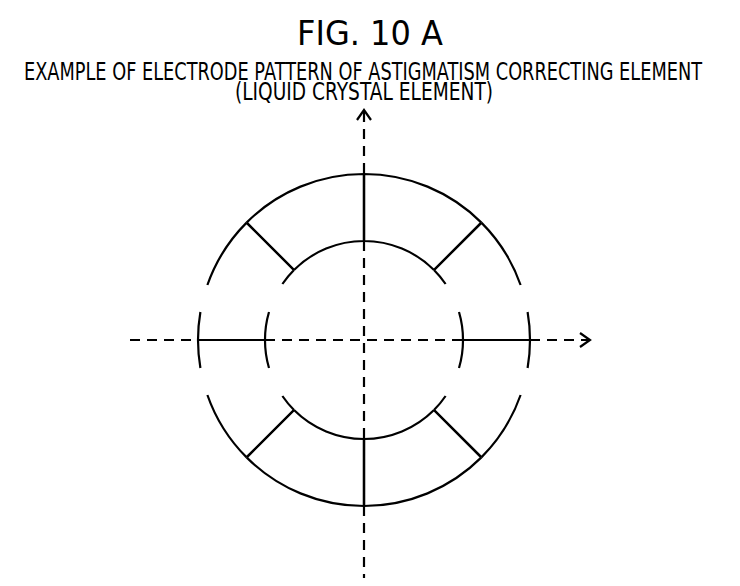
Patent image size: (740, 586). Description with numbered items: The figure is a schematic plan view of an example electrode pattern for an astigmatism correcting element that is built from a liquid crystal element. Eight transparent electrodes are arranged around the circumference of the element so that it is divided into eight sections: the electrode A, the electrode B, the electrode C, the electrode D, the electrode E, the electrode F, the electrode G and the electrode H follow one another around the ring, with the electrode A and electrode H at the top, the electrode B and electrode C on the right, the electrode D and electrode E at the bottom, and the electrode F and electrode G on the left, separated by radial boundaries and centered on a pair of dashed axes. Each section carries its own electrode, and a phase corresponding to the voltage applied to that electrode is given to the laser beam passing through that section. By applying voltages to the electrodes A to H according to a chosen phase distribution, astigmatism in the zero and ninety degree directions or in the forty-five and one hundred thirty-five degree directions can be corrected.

The transparent electrode A is at (422, 222).
The transparent electrode B is at (489, 281).
The transparent electrode C is at (489, 398).
The transparent electrode D is at (422, 458).
The transparent electrode E is at (305, 458).
The transparent electrode F is at (242, 398).
The transparent electrode G is at (242, 281).
The transparent electrode H is at (305, 222).